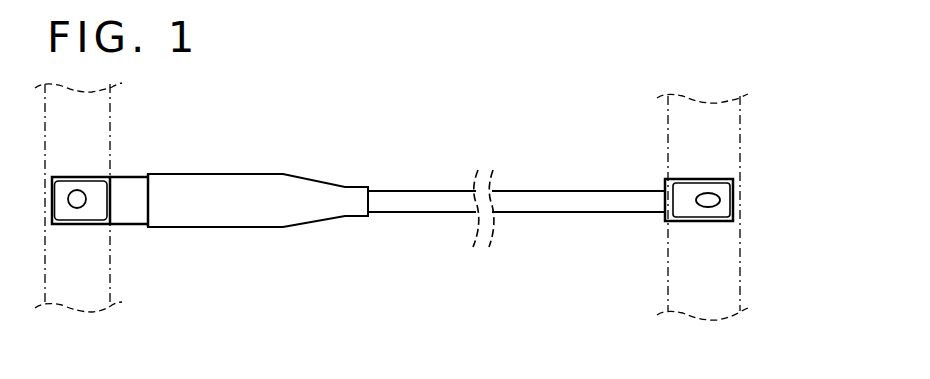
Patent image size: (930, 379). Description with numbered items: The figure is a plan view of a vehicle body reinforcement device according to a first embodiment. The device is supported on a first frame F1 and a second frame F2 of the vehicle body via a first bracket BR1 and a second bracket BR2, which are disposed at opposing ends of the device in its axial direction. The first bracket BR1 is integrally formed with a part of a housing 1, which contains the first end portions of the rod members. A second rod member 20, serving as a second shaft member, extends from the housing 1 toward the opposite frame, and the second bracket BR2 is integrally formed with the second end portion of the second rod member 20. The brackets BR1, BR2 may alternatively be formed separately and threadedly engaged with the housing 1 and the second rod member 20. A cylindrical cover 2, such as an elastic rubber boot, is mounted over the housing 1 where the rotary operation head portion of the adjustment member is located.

The housing 1 is at (123, 227).
The cylindrical cover 2 is at (257, 212).
The second rod member 20 is at (564, 189).
The first bracket BR1 is at (92, 188).
The second bracket BR2 is at (707, 190).
The first frame F1 is at (111, 272).
The second frame F2 is at (742, 257).